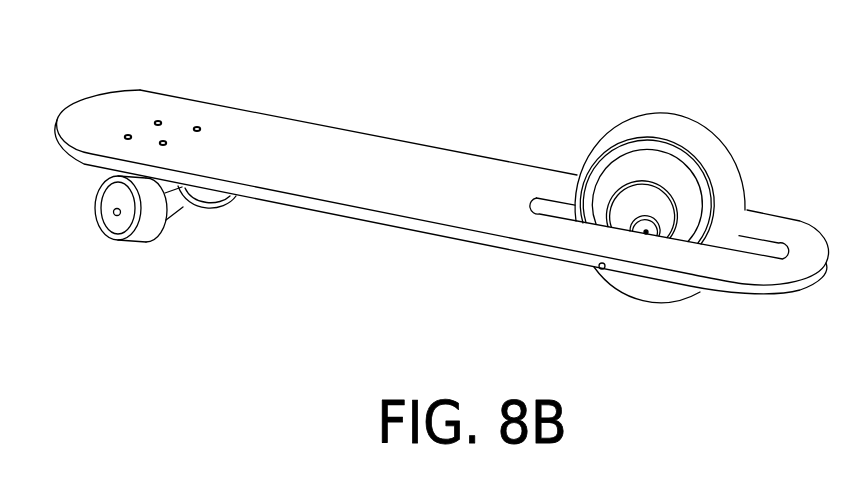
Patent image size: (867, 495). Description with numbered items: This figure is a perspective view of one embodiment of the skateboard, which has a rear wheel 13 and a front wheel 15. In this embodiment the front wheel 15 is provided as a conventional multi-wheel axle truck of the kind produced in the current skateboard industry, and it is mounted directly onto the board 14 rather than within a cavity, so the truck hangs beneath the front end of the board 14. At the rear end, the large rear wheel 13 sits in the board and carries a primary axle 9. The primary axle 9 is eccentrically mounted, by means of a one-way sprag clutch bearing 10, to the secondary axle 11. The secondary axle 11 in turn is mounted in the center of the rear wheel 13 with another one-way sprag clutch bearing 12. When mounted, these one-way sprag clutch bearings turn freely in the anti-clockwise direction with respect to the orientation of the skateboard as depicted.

The primary axle 9 is at (650, 210).
The one-way sprag clutch bearing 10 is at (650, 210).
The secondary axle 11 is at (628, 208).
The one-way sprag clutch bearing 12 is at (620, 188).
The rear wheel 13 is at (697, 135).
The board 14 is at (303, 178).
The front wheel 15 is at (122, 243).